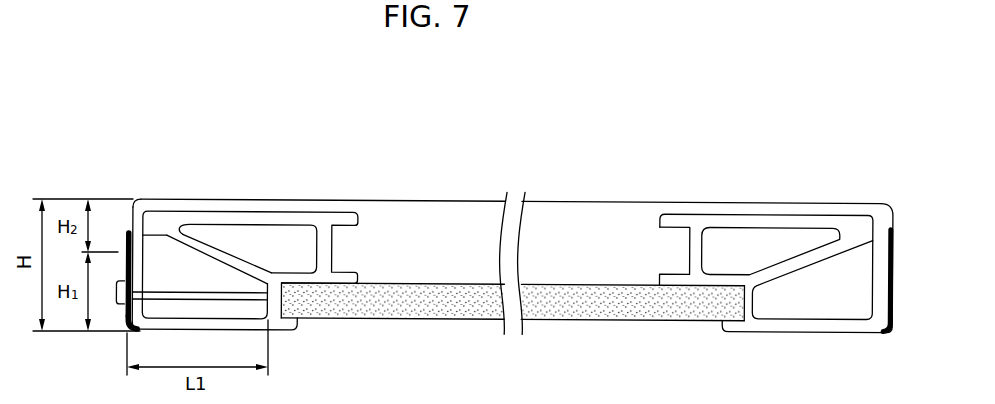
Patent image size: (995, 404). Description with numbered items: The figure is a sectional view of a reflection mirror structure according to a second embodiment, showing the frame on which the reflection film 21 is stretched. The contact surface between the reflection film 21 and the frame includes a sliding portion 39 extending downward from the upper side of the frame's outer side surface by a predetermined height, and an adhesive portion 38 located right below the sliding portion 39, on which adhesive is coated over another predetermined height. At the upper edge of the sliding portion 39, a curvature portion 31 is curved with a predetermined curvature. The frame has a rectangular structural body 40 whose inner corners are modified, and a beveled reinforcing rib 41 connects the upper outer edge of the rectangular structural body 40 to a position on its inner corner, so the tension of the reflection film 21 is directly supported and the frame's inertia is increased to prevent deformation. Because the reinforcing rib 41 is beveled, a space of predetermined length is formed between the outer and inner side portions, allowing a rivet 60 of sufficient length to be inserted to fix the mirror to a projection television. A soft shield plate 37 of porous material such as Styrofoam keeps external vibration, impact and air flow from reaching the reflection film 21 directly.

The reflection film 21 is at (467, 199).
The curvature portion 31 is at (138, 200).
The soft shield plate 37 is at (447, 303).
The adhesive portion 38 is at (126, 311).
The sliding portion 39 is at (126, 231).
The rectangular structural body 40 is at (137, 267).
The reinforcing rib 41 is at (223, 257).
The rivet 60 is at (187, 293).